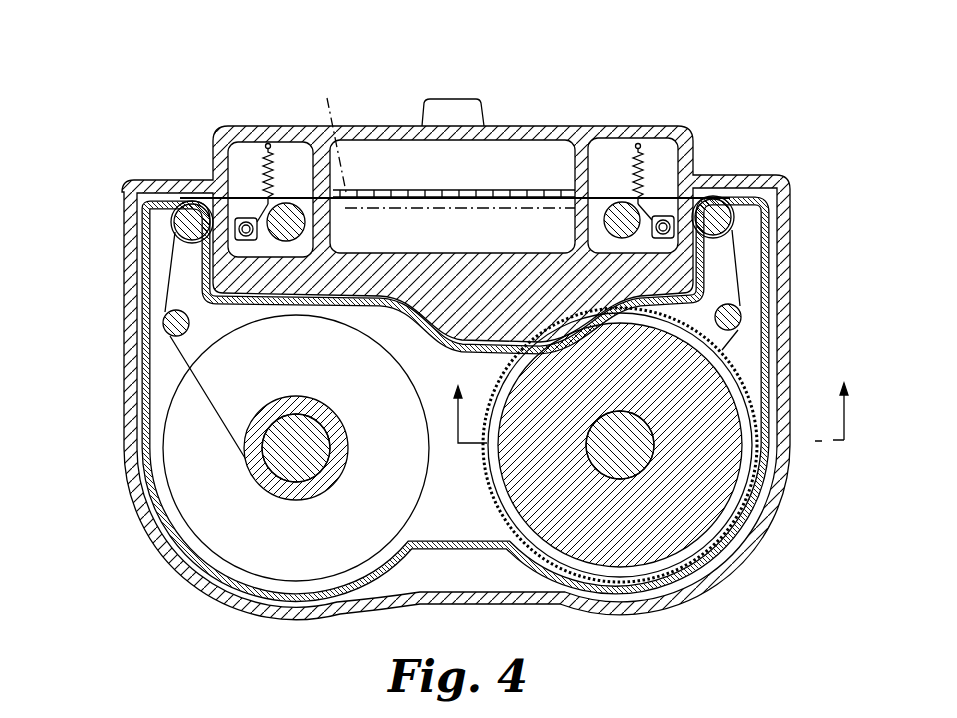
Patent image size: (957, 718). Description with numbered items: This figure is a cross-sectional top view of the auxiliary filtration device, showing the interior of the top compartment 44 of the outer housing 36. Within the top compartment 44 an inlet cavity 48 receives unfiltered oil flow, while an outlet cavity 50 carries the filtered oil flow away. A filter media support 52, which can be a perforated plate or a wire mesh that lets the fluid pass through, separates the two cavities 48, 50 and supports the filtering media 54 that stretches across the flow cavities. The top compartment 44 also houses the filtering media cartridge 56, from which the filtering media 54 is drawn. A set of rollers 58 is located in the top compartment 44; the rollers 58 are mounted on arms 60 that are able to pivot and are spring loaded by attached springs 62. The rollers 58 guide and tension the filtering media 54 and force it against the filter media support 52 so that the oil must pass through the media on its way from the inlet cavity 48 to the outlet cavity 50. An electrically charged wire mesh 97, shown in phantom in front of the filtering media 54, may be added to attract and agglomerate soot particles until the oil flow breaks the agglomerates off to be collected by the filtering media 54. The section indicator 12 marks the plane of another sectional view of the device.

The top compartment 44 is at (140, 130).
The outer housing 36 is at (788, 330).
The outlet cavity 50 is at (410, 153).
The filtering media cartridge 56 is at (438, 550).
The filtering media 54 is at (740, 252).
The rollers 58 is at (272, 212).
The springs 62 is at (262, 160).
The arms 60 is at (256, 216).
The filter media support 52 is at (384, 192).
The inlet cavity 48 is at (491, 212).
The electrically charged wire mesh 97 is at (331, 132).
The section line 12- 12 is at (652, 430).